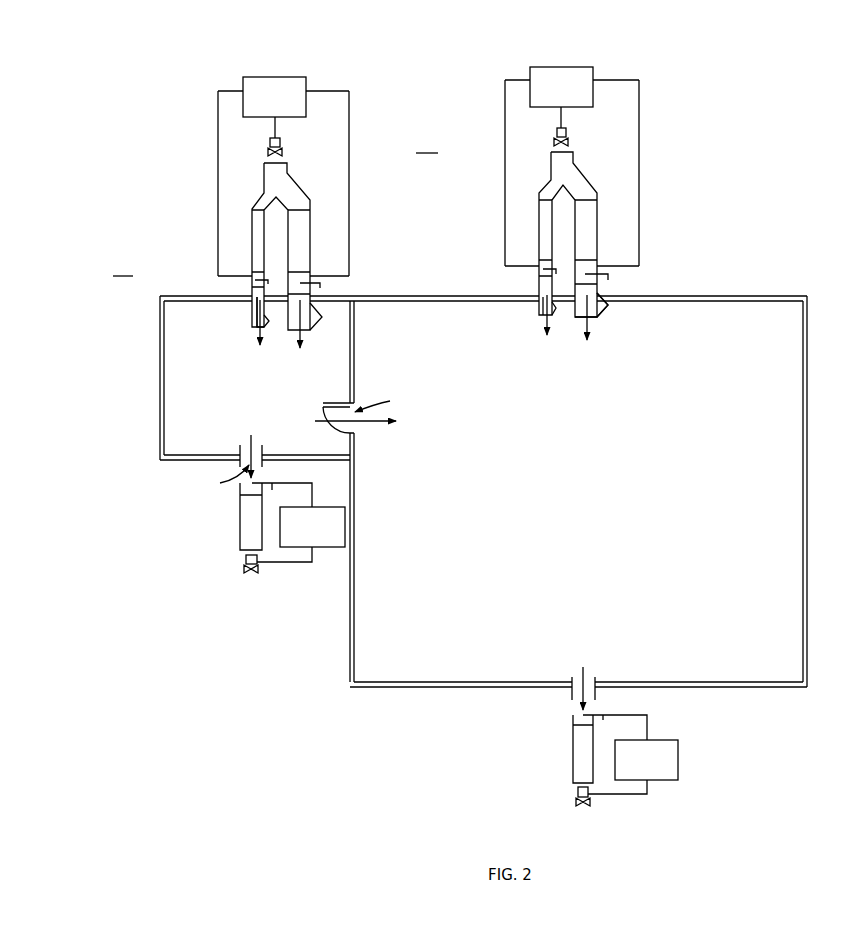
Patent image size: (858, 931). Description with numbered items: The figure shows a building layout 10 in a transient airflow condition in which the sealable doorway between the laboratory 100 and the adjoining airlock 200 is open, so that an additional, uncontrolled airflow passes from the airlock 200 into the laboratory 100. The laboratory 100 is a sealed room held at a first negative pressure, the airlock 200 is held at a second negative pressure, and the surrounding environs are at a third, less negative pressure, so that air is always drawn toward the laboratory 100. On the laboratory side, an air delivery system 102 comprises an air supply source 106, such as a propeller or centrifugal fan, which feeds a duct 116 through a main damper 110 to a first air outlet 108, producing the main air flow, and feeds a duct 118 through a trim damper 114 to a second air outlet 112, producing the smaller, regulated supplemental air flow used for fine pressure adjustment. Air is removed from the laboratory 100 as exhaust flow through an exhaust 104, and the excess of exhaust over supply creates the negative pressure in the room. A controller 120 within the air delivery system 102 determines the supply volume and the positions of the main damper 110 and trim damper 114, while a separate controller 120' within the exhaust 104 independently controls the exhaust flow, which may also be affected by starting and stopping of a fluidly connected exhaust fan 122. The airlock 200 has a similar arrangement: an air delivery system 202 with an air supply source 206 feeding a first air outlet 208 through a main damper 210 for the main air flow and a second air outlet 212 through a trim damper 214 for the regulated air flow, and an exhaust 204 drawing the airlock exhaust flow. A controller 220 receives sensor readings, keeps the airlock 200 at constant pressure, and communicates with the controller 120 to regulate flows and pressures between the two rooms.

The building layout 10 is at (803, 62).
The laboratory 100 is at (562, 480).
The air delivery system 102 is at (685, 130).
The exhaust 104 is at (722, 758).
The air supply source 106 is at (569, 130).
The first air outlet 108 is at (602, 320).
The main damper 110 is at (604, 282).
The second air outlet 112 is at (535, 308).
The trim damper 114 is at (537, 275).
The duct 116 is at (600, 222).
The duct 118 is at (535, 238).
The controller 120 is at (567, 67).
The controller 120' is at (666, 743).
The exhaust fan 122 is at (599, 805).
The airlock 200 is at (173, 385).
The air delivery system 202 is at (176, 162).
The exhaust 204 is at (226, 536).
The air supply source 206 is at (284, 141).
The first air outlet 208 is at (314, 331).
The main damper 210 is at (329, 289).
The second air outlet 212 is at (253, 328).
The trim damper 214 is at (246, 284).
The controller 220 is at (262, 73).